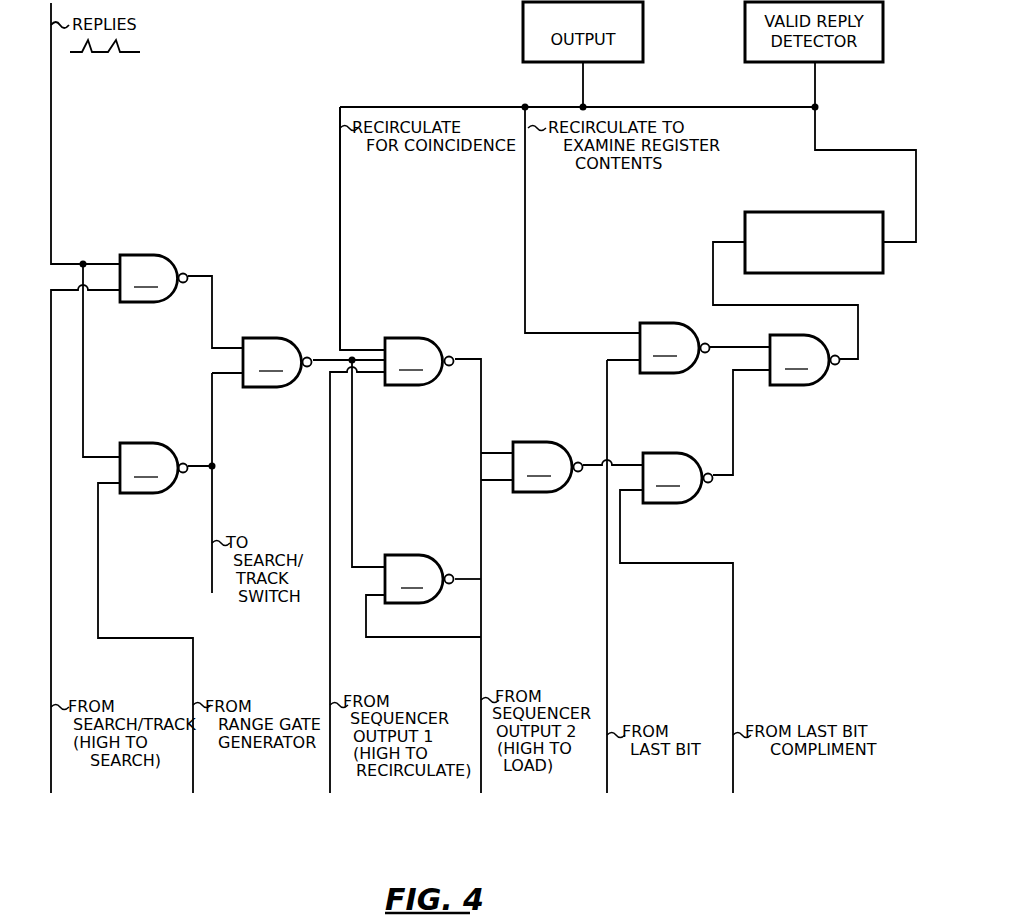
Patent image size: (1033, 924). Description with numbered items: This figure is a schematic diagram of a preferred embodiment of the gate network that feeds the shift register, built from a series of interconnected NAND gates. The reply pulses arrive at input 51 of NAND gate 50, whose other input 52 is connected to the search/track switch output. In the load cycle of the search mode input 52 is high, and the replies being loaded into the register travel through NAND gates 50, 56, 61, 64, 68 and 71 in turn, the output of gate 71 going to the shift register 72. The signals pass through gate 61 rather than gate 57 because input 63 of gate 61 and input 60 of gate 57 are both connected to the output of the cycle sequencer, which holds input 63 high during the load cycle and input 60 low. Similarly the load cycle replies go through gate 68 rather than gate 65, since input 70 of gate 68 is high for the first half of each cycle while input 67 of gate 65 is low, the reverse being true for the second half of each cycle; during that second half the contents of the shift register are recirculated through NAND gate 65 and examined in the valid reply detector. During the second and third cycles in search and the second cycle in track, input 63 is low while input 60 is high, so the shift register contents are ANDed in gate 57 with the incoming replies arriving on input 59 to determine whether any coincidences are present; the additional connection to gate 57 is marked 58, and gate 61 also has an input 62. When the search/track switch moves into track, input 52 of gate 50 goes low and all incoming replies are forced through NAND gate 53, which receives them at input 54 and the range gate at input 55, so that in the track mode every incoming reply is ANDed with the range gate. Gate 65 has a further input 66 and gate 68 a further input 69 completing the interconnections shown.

The NAND gate 50 is at (154, 278).
The input 51 is at (119, 258).
The input 52 is at (120, 298).
The NAND gate 53 is at (154, 468).
The input of NAND gate 53 54 is at (118, 452).
The input of NAND gate 53 55 is at (120, 493).
The NAND gate 56 is at (277, 362).
The NAND gate 57 is at (419, 361).
The input of NAND gate 57 58 is at (385, 344).
The input 59 is at (380, 350).
The input 60 is at (385, 383).
The NAND gate 61 is at (419, 579).
The input of NAND gate 61 62 is at (382, 560).
The input 63 is at (385, 602).
The NAND gate 64 is at (548, 467).
The NAND gate 65 is at (675, 348).
The input of NAND gate 65 66 is at (636, 326).
The input 67 is at (640, 372).
The NAND gate 68 is at (678, 478).
The input of NAND gate 68 69 is at (636, 456).
The input 70 is at (643, 503).
The NAND gate 71 is at (805, 360).
The shift register 72 is at (870, 212).